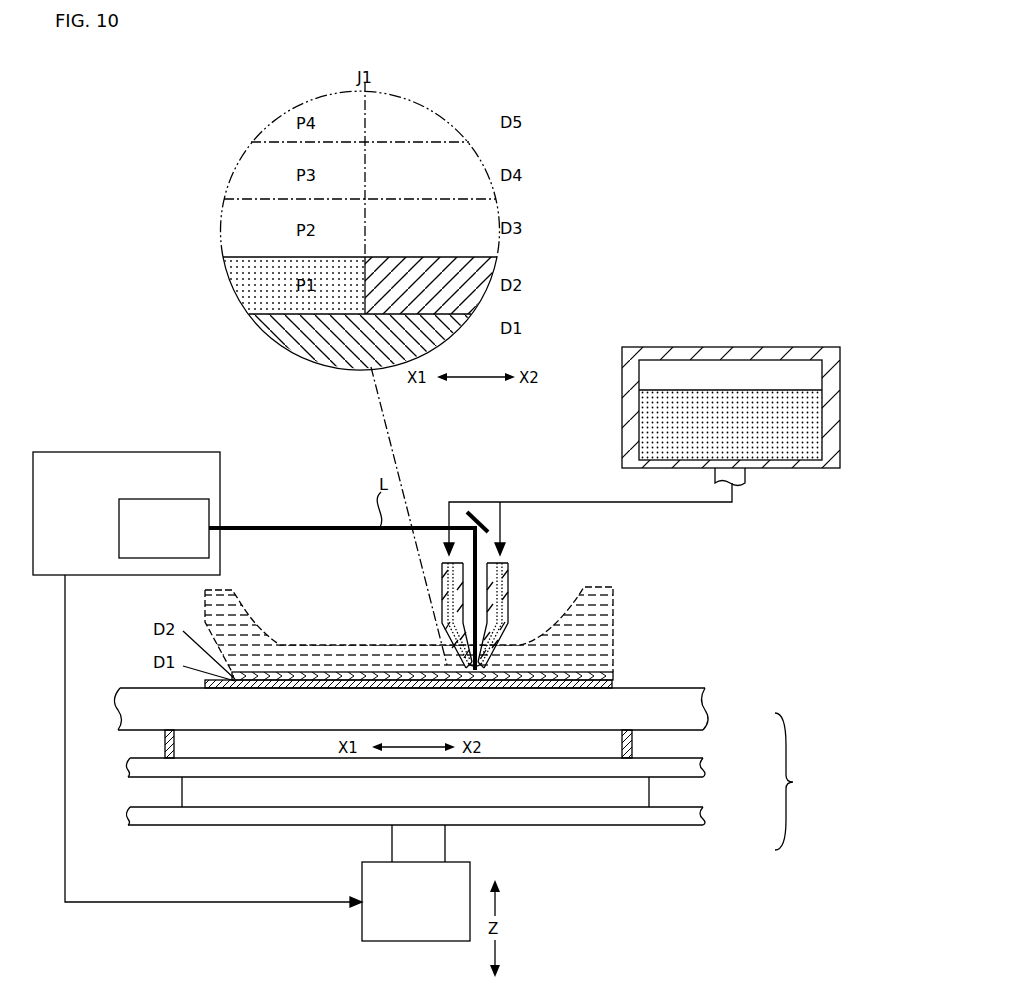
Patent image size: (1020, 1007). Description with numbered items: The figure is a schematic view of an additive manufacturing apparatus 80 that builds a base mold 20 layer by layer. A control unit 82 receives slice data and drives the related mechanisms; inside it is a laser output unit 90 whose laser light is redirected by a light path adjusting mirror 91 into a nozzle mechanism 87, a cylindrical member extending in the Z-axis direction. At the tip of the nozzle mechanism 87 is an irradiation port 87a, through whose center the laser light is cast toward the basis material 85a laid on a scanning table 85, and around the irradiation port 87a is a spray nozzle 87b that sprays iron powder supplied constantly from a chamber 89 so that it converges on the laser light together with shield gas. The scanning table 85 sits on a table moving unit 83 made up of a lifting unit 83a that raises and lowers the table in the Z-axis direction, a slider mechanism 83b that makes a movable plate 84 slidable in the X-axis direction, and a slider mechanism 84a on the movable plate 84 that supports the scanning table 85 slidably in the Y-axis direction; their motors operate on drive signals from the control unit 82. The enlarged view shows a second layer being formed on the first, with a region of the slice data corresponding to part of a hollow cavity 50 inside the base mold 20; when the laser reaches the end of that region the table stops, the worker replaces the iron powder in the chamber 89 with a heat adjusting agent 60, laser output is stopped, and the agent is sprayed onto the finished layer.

The additive manufacturing apparatus 80 is at (443, 445).
The control unit 82 is at (162, 452).
The laser output unit 90 is at (140, 499).
The light path adjusting mirror 91 is at (476, 516).
The chamber 89 is at (622, 393).
The heat adjusting agent 60 is at (702, 390).
The base mold 20 is at (275, 624).
The hollow cavity 50 is at (333, 674).
The nozzle mechanism 87 is at (494, 627).
The irradiation port 87a is at (504, 629).
The spray nozzle 87b is at (461, 672).
The scanning table 85 is at (415, 683).
The basis material 85a is at (612, 682).
The slider mechanism 84a is at (632, 747).
The movable plate 84 is at (663, 771).
The table moving unit 83 is at (796, 781).
The lifting unit 83a is at (455, 888).
The slider mechanism 83b is at (608, 797).